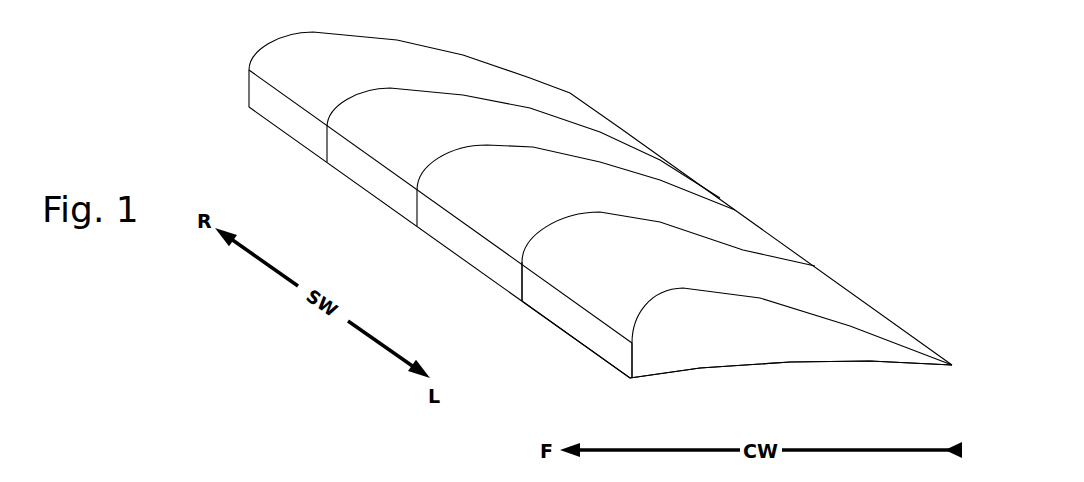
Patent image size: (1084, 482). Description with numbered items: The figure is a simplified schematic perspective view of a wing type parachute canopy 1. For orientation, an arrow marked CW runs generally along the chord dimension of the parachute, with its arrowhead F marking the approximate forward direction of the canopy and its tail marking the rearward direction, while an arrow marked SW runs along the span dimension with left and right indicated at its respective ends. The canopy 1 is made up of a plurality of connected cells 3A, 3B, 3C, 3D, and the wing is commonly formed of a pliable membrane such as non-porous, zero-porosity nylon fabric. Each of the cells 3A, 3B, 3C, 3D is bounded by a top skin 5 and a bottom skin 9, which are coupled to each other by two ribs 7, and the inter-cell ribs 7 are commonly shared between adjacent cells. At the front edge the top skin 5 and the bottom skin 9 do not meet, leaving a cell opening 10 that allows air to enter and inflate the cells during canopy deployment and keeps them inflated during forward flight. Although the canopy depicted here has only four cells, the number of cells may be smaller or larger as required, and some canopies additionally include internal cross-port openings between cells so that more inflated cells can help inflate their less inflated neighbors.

The wing type parachute canopy 1 is at (205, 104).
The cell 3A is at (568, 110).
The cell 3B is at (643, 172).
The cell 3C is at (703, 220).
The cell 3D is at (778, 297).
The top skin 5 is at (593, 299).
The rib 7 is at (515, 275).
The bottom skin 9 is at (820, 366).
The cell opening 10 is at (593, 332).